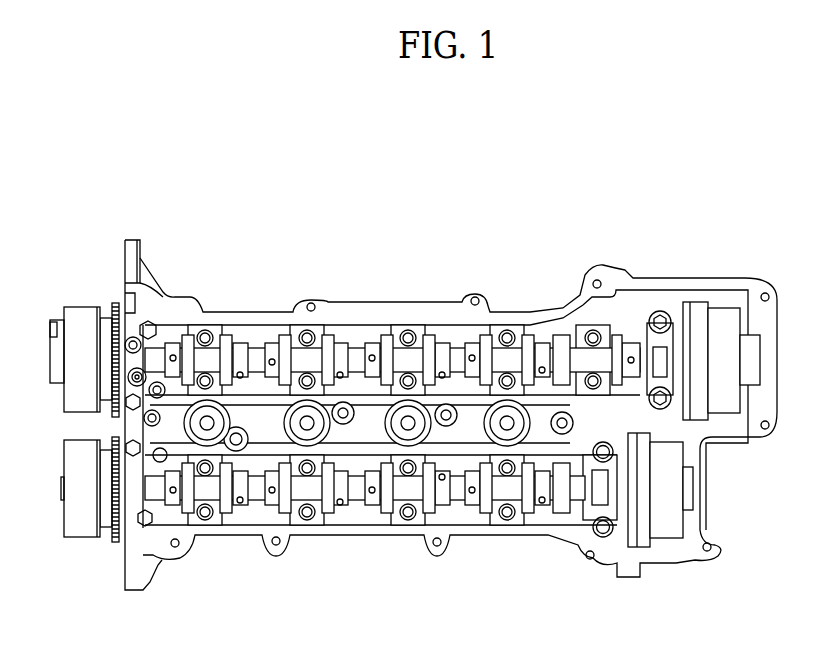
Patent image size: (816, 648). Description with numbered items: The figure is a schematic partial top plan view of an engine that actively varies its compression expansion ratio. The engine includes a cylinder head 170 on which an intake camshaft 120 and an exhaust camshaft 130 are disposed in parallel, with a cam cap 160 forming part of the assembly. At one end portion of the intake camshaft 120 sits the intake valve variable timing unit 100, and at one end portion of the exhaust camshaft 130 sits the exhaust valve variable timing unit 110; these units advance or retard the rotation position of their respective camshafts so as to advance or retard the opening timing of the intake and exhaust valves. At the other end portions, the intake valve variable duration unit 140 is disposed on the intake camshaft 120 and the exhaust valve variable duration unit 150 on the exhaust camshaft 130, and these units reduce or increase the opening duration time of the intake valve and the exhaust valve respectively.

The intake valve variable timing unit 100 is at (55, 524).
The exhaust valve variable timing unit 110 is at (55, 403).
The intake camshaft 120 is at (445, 525).
The exhaust camshaft 130 is at (443, 330).
The intake valve variable duration unit 140 is at (690, 530).
The exhaust valve variable duration unit 150 is at (728, 310).
The cam cap 160 is at (387, 333).
The cylinder head 170 is at (195, 535).